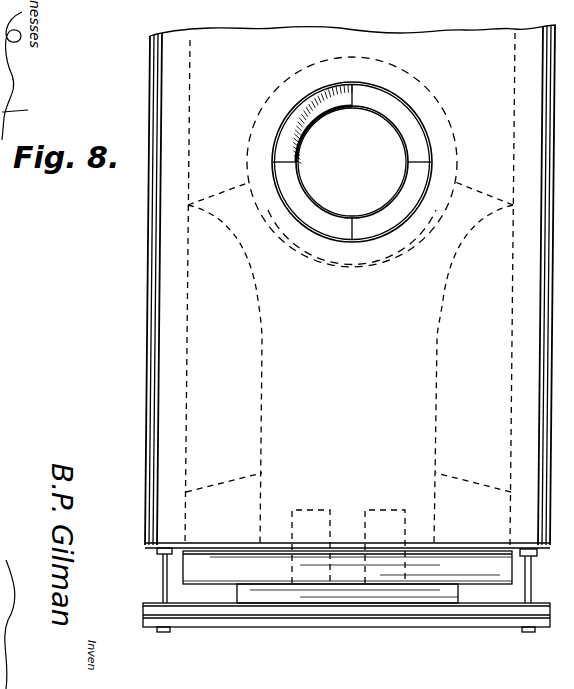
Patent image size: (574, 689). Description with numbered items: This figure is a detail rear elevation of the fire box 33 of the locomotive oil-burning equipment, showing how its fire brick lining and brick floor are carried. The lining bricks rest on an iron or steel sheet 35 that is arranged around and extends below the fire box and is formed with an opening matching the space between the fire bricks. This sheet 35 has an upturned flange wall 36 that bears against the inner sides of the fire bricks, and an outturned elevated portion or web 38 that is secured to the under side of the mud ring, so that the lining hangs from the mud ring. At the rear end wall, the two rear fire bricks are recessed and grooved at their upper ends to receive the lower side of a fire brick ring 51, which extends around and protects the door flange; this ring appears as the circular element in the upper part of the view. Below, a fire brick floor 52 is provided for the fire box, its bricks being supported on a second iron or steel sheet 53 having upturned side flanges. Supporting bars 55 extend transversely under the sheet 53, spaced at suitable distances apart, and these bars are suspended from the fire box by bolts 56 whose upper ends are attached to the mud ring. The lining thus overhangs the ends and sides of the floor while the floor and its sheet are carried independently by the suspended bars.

The fire box 33 is at (147, 396).
The fire brick ring 51 is at (414, 138).
The outturned elevated portion or web 38 is at (466, 546).
The upturned flange wall 36 is at (200, 560).
The fire brick floor 52 is at (378, 600).
The supporting bars 55 is at (248, 627).
The iron or steel sheet 53 is at (313, 612).
The bolts 56 is at (157, 587).
The iron or steel sheet 35 is at (503, 571).